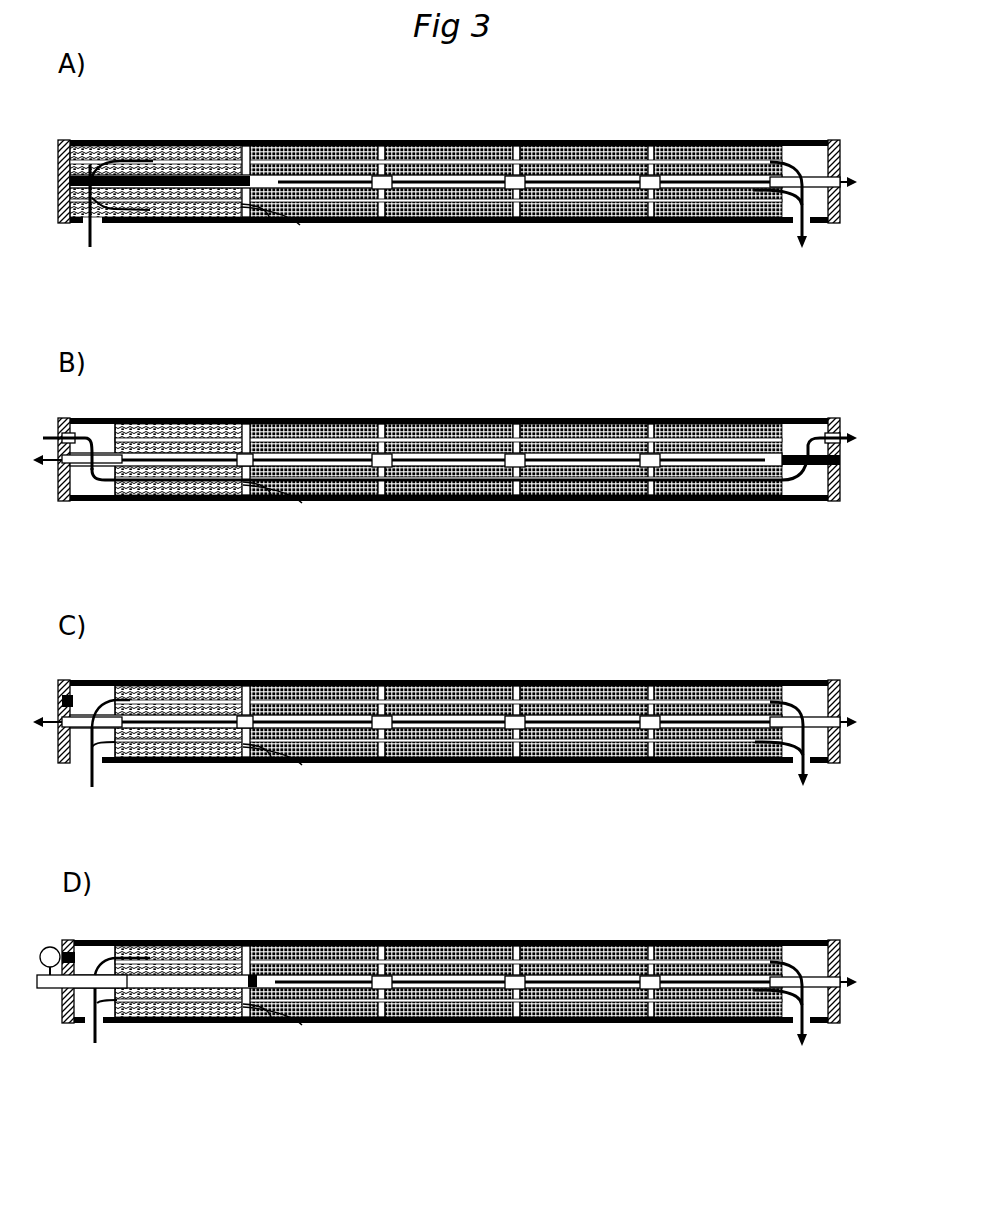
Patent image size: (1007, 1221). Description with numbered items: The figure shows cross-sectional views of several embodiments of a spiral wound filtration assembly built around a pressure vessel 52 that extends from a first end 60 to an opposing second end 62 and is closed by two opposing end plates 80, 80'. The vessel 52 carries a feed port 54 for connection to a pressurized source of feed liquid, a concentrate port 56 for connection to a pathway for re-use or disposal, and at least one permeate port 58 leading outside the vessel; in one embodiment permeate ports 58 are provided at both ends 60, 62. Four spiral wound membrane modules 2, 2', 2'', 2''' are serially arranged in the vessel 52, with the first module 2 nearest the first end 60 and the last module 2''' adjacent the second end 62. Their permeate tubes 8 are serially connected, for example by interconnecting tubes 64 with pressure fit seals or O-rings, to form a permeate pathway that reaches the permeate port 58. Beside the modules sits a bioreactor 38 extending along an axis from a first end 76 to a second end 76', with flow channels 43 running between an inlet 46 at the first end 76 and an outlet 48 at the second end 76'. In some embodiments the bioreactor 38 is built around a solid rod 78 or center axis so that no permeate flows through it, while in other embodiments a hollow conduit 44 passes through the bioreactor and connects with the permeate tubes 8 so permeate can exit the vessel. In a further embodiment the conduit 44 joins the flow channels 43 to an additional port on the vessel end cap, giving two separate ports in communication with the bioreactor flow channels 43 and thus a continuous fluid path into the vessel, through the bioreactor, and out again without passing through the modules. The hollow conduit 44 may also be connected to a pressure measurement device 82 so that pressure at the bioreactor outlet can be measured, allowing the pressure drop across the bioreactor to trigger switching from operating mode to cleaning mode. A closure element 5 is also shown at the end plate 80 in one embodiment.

In FIG. 3A, the spiral wound membrane module 2 is at (317, 144).
In FIG. 3B, the spiral wound membrane module 2 is at (317, 420).
In FIG. 3C, the spiral wound membrane module 2 is at (317, 683).
In FIG. 3D, the spiral wound membrane module 2 is at (317, 945).
In FIG. 3A, the spiral wound membrane module 2' is at (452, 145).
In FIG. 3B, the spiral wound membrane module 2' is at (452, 423).
In FIG. 3C, the spiral wound membrane module 2' is at (452, 685).
In FIG. 3D, the spiral wound membrane module 2' is at (452, 945).
In FIG. 3A, the spiral wound membrane module 2'' is at (587, 145).
In FIG. 3B, the spiral wound membrane module 2'' is at (587, 423).
In FIG. 3C, the spiral wound membrane module 2'' is at (587, 685).
In FIG. 3D, the spiral wound membrane module 2'' is at (587, 945).
In FIG. 3A, the spiral wound membrane module 2''' is at (718, 142).
In FIG. 3B, the spiral wound membrane module 2''' is at (718, 420).
In FIG. 3C, the spiral wound membrane module 2''' is at (718, 683).
In FIG. 3D, the spiral wound membrane module 2''' is at (718, 943).
In FIG. 3C, the closure element 5 is at (60, 727).
In FIG. 3A, the permeate tube 8 is at (313, 175).
In FIG. 3B, the permeate tube 8 is at (313, 453).
In FIG. 3C, the permeate tube 8 is at (313, 715).
In FIG. 3D, the permeate tube 8 is at (313, 975).
In FIG. 3A, the bioreactor 38 is at (177, 140).
In FIG. 3B, the bioreactor 38 is at (177, 418).
In FIG. 3C, the bioreactor 38 is at (177, 680).
In FIG. 3D, the bioreactor 38 is at (180, 940).
In FIG. 3A, the flow channels 43 is at (235, 140).
In FIG. 3B, the flow channels 43 is at (240, 424).
In FIG. 3C, the flow channels 43 is at (240, 686).
In FIG. 3D, the flow channels 43 is at (242, 946).
In FIG. 3B, the hollow conduit 44 is at (155, 424).
In FIG. 3C, the hollow conduit 44 is at (155, 686).
In FIG. 3D, the hollow conduit 44 is at (160, 946).
In FIG. 3A, the inlet 46 is at (107, 217).
In FIG. 3B, the inlet 46 is at (143, 495).
In FIG. 3C, the inlet 46 is at (143, 763).
In FIG. 3D, the inlet 46 is at (143, 1023).
In FIG. 3A, the outlet 48 is at (300, 225).
In FIG. 3B, the outlet 48 is at (302, 503).
In FIG. 3C, the outlet 48 is at (302, 765).
In FIG. 3D, the outlet 48 is at (302, 1025).
In FIG. 3A, the pressure vessel 52 is at (720, 140).
In FIG. 3B, the pressure vessel 52 is at (720, 418).
In FIG. 3C, the pressure vessel 52 is at (720, 680).
In FIG. 3D, the pressure vessel 52 is at (720, 940).
In FIG. 3A, the feed port 54 is at (100, 233).
In FIG. 3C, the feed port 54 is at (98, 763).
In FIG. 3D, the feed port 54 is at (100, 1023).
In FIG. 3A, the concentrate port 56 is at (810, 223).
In FIG. 3B, the concentrate port 56 is at (60, 433).
In FIG. 3C, the concentrate port 56 is at (810, 763).
In FIG. 3D, the concentrate port 56 is at (810, 1023).
In FIG. 3A, the permeate port 58 is at (838, 167).
In FIG. 3B, the permeate port 58 is at (57, 478).
In FIG. 3C, the permeate port 58 is at (840, 707).
In FIG. 3D, the permeate port 58 is at (838, 967).
In FIG. 3A, the first end 60 is at (90, 140).
In FIG. 3B, the first end 60 is at (90, 418).
In FIG. 3C, the first end 60 is at (90, 680).
In FIG. 3D, the first end 60 is at (94, 940).
In FIG. 3A, the second end 62 is at (797, 140).
In FIG. 3B, the second end 62 is at (797, 418).
In FIG. 3C, the second end 62 is at (797, 680).
In FIG. 3D, the second end 62 is at (797, 940).
In FIG. 3A, the interconnecting tubes 64 is at (385, 176).
In FIG. 3B, the interconnecting tubes 64 is at (385, 454).
In FIG. 3C, the interconnecting tubes 64 is at (385, 716).
In FIG. 3D, the interconnecting tubes 64 is at (385, 976).
In FIG. 3A, the first end 76 is at (96, 217).
In FIG. 3B, the first end 76 is at (166, 505).
In FIG. 3C, the first end 76 is at (145, 751).
In FIG. 3D, the first end 76 is at (146, 1010).
In FIG. 3A, the second end 76' is at (286, 231).
In FIG. 3B, the second end 76' is at (287, 510).
In FIG. 3C, the second end 76' is at (287, 772).
In FIG. 3D, the second end 76' is at (287, 1032).
In FIG. 3A, the solid rod 78 is at (155, 178).
In FIG. 3A, the end plate 80 is at (76, 161).
In FIG. 3B, the end plate 80 is at (86, 500).
In FIG. 3C, the end plate 80 is at (85, 762).
In FIG. 3D, the end plate 80 is at (89, 1021).
In FIG. 3A, the end plate 80' is at (851, 209).
In FIG. 3B, the end plate 80' is at (825, 488).
In FIG. 3C, the end plate 80' is at (852, 749).
In FIG. 3D, the end plate 80' is at (852, 1009).
In FIG. 3D, the pressure measurement device 82 is at (50, 947).